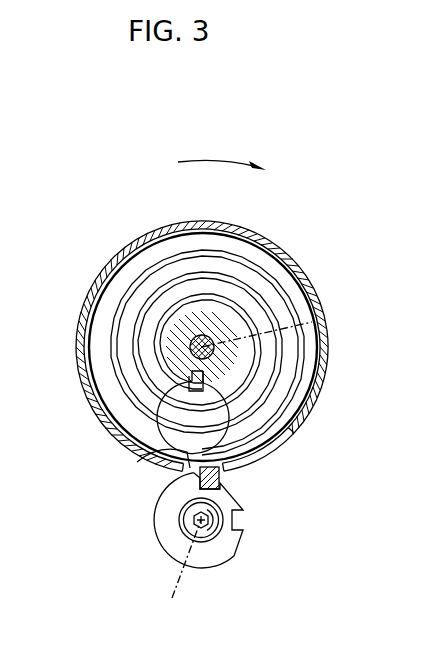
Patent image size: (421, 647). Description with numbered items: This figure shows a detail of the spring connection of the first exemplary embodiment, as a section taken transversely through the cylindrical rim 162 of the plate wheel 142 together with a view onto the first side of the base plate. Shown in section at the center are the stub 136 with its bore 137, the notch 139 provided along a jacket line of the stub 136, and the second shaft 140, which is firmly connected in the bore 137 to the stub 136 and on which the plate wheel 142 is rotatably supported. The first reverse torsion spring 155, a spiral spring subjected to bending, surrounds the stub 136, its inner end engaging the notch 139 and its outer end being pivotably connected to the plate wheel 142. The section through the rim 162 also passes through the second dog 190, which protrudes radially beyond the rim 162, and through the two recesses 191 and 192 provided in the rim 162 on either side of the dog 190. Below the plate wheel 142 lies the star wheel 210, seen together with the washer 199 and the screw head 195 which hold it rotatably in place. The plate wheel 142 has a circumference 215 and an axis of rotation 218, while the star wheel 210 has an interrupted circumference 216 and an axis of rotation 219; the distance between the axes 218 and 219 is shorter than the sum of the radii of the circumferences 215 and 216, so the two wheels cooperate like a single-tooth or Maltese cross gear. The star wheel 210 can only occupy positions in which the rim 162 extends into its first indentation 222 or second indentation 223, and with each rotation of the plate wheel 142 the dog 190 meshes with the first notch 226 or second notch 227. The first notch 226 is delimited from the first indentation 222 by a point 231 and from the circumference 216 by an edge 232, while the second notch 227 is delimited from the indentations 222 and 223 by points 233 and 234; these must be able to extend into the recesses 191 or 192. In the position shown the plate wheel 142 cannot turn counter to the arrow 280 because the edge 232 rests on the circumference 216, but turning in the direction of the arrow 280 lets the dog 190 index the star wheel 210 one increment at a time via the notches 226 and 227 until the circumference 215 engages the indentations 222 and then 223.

The arrow 280 is at (221, 148).
The first reverse torsion spring 155 is at (159, 236).
The stub 136 is at (203, 334).
The bore 137 is at (213, 337).
The second shaft 140 is at (228, 332).
The cylindrical rim 162 is at (110, 261).
The circumference 215 is at (86, 301).
The axis of rotation 218 is at (272, 336).
The plate wheel 142 is at (76, 359).
The notch 139 is at (232, 370).
The second dog 190 is at (208, 467).
The recess 191 is at (138, 462).
The recess 192 is at (236, 473).
The edge 232 is at (176, 478).
The point 231 is at (240, 491).
The first indentation 222 is at (248, 506).
The first notch 226 is at (179, 518).
The point 233 is at (238, 520).
The head 195 is at (176, 524).
The second notch 227 is at (238, 532).
The washer 199 is at (195, 524).
The point 234 is at (236, 534).
The circumference 216 is at (168, 561).
The second indentation 223 is at (234, 551).
The axis of rotation 219 is at (178, 571).
The star wheel 210 is at (204, 570).